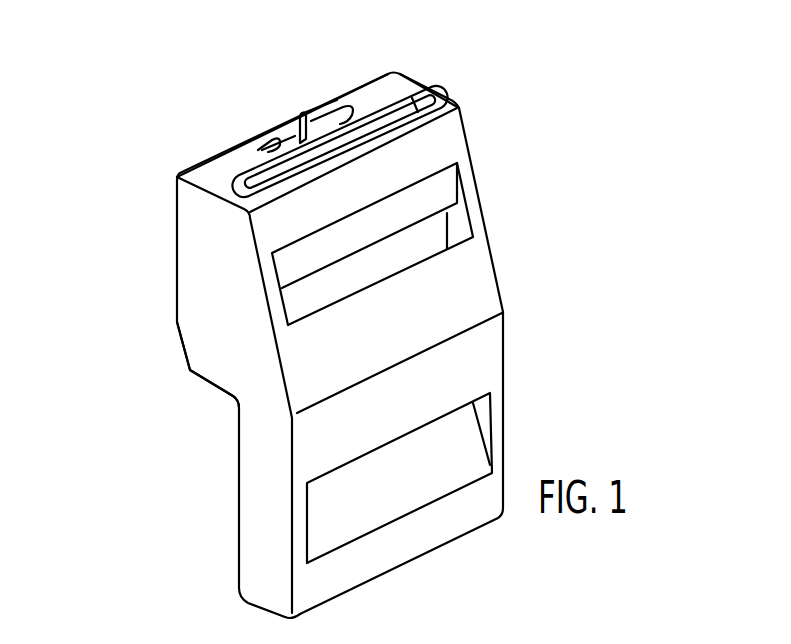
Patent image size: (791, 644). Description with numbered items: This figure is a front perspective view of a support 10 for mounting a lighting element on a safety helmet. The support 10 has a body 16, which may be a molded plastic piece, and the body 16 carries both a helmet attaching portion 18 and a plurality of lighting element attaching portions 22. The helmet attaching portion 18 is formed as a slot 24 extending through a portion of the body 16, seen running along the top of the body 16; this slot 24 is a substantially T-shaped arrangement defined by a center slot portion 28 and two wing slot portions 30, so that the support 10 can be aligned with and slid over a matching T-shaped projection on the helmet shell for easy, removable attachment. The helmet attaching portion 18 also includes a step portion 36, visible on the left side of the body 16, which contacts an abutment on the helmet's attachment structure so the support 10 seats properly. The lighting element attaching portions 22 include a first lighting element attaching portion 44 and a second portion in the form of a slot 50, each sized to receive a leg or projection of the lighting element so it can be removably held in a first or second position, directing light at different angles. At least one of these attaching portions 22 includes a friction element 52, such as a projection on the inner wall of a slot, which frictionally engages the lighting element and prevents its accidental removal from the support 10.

The support 10 is at (607, 104).
The body 16 is at (480, 290).
The helmet attaching portion 18 is at (244, 98).
The lighting element attaching portions 22 is at (486, 116).
The slot 24 is at (291, 108).
The center slot portion 28 is at (292, 150).
The wing slot portions 30 is at (333, 125).
The step portion 36 is at (212, 385).
The first lighting element attaching portion 44 is at (642, 643).
The slot 50 is at (411, 114).
The friction element 52 is at (430, 238).